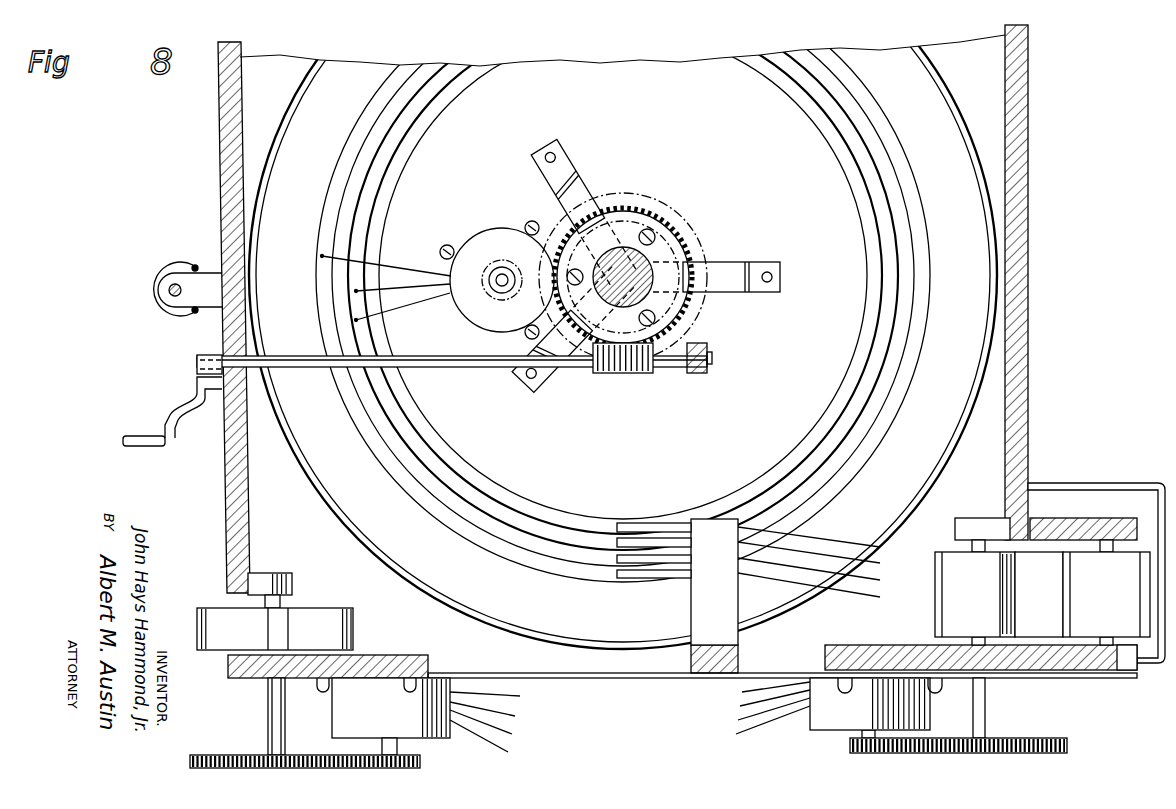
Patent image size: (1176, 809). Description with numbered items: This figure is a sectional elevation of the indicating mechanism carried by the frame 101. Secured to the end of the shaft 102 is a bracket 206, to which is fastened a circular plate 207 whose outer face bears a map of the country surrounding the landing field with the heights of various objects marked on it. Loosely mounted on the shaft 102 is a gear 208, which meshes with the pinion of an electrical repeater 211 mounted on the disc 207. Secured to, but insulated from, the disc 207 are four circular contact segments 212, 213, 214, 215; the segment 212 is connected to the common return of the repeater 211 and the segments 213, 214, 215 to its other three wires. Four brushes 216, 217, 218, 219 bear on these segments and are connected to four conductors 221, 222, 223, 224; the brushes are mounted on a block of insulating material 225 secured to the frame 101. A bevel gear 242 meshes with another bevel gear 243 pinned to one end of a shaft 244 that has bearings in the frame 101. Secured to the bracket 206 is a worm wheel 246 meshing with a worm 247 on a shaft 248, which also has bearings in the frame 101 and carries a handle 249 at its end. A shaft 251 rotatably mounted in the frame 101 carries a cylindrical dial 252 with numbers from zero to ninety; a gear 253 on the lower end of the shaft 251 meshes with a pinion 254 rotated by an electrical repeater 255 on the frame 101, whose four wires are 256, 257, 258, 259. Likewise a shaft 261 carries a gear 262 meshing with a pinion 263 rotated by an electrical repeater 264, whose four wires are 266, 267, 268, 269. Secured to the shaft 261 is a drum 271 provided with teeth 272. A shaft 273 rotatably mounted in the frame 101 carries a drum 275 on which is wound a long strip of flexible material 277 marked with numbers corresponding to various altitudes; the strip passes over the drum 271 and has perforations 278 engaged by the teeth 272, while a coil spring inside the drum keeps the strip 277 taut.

The frame 101 is at (220, 160).
The shaft 102 is at (632, 268).
The bracket 206 is at (595, 175).
The circular plate 207 is at (860, 60).
The gear 208 is at (655, 186).
The electrical repeater 211 is at (478, 236).
The circular contact segment 212 is at (875, 283).
The circular contact segment 213 is at (888, 312).
The circular contact segment 214 is at (914, 283).
The circular contact segment 215 is at (928, 302).
The brush 216 is at (640, 523).
The brush 217 is at (618, 541).
The brush 218 is at (620, 563).
The brush 219 is at (623, 578).
The conductor 221 is at (805, 540).
The conductor 222 is at (812, 556).
The conductor 223 is at (835, 592).
The conductor 224 is at (822, 606).
The block of insulating material 225 is at (690, 612).
The bevel gear 242 is at (194, 266).
The bevel gear 243 is at (152, 283).
The shaft 244 is at (170, 292).
The worm wheel 246 is at (700, 318).
The worm 247 is at (630, 375).
The shaft 248 is at (470, 368).
The handle 249 is at (183, 402).
The shaft 251 is at (268, 720).
The cylindrical dial 252 is at (215, 612).
The gear 253 is at (228, 760).
The pinion 254 is at (421, 761).
The electrical repeater 255 is at (375, 690).
The wire 256 is at (520, 696).
The wire 257 is at (515, 716).
The wire 258 is at (512, 734).
The wire 259 is at (508, 752).
The shaft 261 is at (955, 548).
The gear 262 is at (1008, 738).
The pinion 263 is at (850, 748).
The electrical repeater 264 is at (828, 672).
The wire 266 is at (742, 692).
The wire 267 is at (740, 706).
The wire 268 is at (738, 720).
The wire 269 is at (736, 734).
The drum 271 is at (1005, 540).
The teeth 272 is at (940, 628).
The shaft 273 is at (1128, 518).
The drum 275 is at (1108, 668).
The strip of flexible material 277 is at (1040, 570).
The perforations 278 is at (1048, 645).